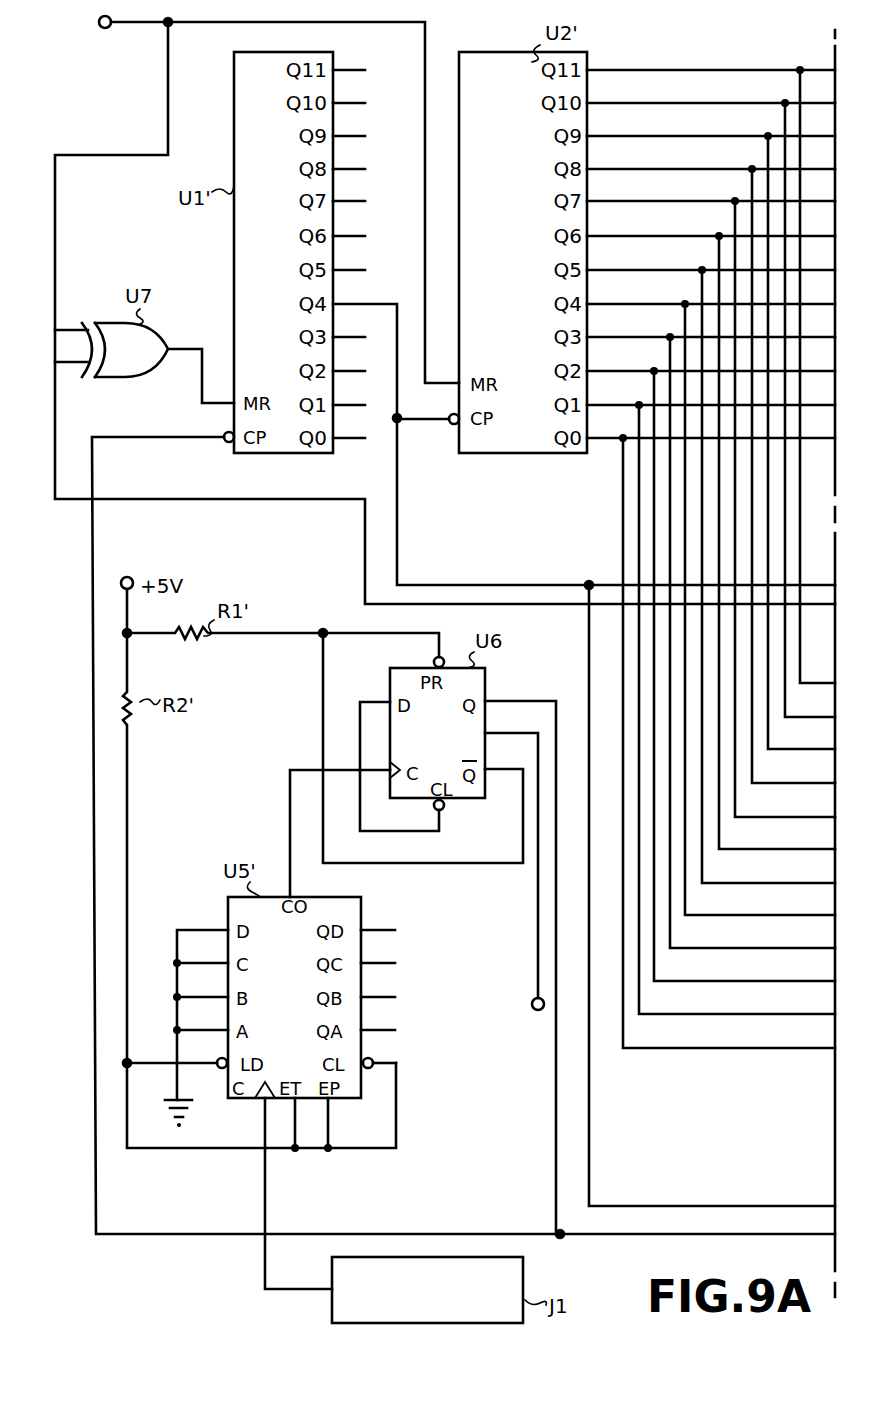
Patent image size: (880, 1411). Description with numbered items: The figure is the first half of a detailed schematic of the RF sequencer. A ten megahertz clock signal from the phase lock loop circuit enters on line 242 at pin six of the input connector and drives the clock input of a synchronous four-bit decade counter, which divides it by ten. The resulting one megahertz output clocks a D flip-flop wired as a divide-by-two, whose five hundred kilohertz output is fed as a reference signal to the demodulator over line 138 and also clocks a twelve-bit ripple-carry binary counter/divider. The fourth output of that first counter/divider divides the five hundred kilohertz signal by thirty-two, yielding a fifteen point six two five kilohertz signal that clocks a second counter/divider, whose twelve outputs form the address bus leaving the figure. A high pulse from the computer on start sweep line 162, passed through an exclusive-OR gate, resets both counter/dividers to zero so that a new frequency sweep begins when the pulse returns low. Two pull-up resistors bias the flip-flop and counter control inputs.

The start sweep line 162 is at (140, 26).
The line to demodulator 138 is at (536, 950).
The 10 MHz clock input line 242 is at (525, 1282).